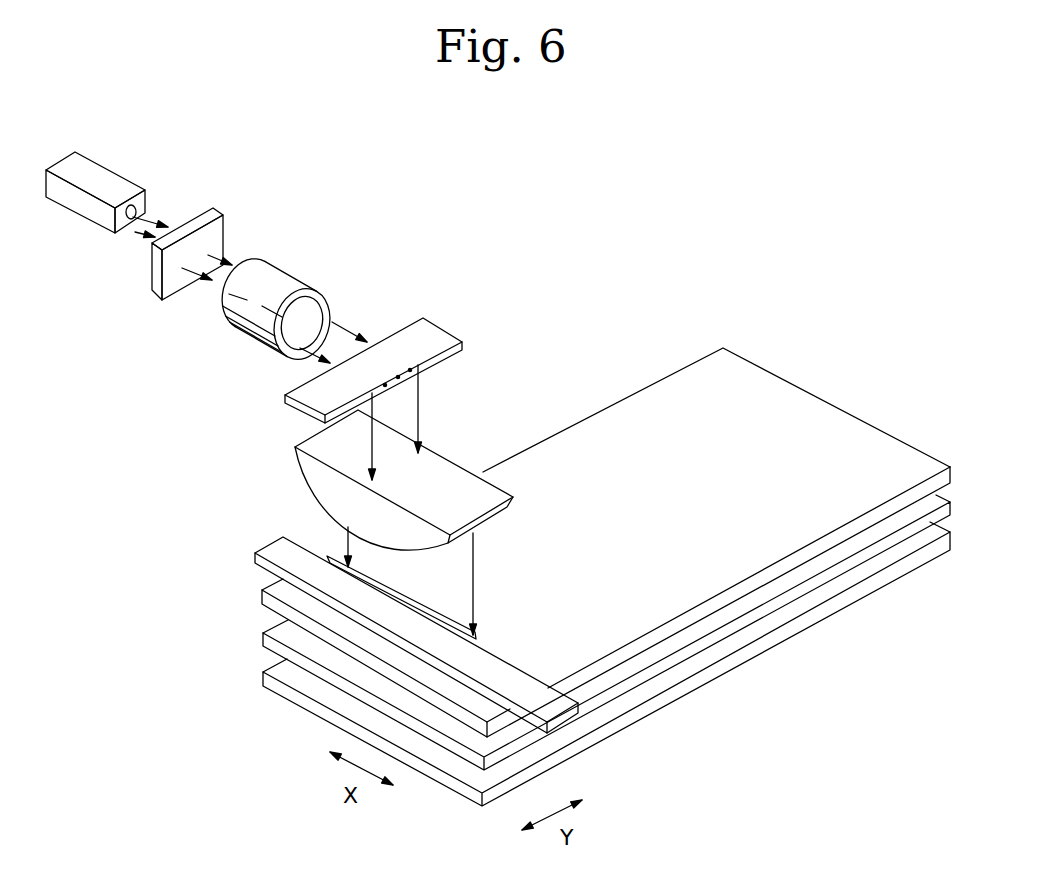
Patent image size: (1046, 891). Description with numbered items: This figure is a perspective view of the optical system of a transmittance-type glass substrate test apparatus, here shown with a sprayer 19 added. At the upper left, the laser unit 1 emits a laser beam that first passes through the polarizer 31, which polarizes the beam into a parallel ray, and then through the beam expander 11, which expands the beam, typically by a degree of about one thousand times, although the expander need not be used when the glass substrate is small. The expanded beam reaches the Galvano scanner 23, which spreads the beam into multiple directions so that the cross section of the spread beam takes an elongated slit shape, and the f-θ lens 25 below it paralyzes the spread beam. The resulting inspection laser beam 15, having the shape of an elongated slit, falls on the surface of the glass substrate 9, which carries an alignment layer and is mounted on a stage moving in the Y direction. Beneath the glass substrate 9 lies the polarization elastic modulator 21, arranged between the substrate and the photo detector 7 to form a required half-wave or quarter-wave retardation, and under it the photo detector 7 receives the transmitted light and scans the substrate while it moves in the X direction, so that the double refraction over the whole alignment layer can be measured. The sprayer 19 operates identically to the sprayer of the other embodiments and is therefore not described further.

The laser unit 1 is at (123, 162).
The polarizer 31 is at (233, 208).
The beam expander 11 is at (287, 255).
The Galvano scanner 23 is at (445, 312).
The f-θ lens 25 is at (460, 437).
The inspection laser beam 15 is at (357, 577).
The sprayer 19 is at (387, 615).
The glass substrate 9 is at (767, 580).
The polarization elastic modulator 21 is at (740, 620).
The photo detector 7 is at (722, 667).